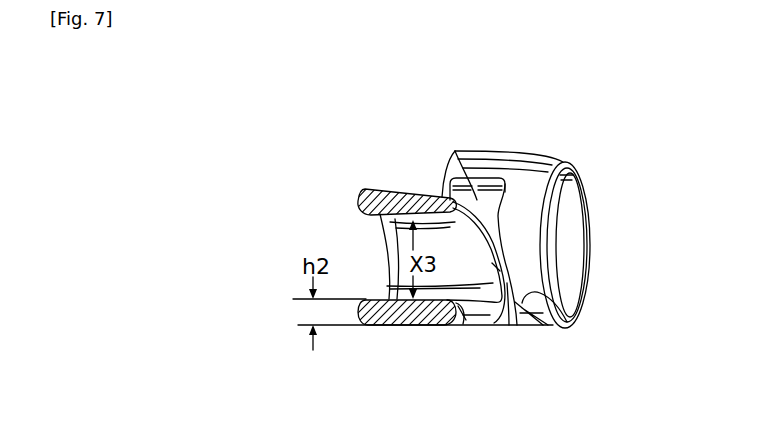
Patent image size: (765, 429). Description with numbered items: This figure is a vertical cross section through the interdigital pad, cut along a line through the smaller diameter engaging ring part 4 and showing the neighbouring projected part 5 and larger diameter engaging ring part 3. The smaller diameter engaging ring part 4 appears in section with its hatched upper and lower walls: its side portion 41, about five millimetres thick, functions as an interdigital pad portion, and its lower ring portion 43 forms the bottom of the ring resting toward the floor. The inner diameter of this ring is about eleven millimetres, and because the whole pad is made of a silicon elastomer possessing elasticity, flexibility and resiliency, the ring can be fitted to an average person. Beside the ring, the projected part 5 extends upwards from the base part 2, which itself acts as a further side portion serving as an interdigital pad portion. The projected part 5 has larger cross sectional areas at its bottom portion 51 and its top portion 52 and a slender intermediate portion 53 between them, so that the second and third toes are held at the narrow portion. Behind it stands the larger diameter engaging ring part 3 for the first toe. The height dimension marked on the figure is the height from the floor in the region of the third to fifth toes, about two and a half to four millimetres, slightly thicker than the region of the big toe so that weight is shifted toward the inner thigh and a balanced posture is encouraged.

The base part 2 is at (535, 327).
The larger diameter engaging ring part 3 is at (559, 145).
The smaller diameter engaging ring part 4 is at (376, 184).
The projected part 5 is at (480, 152).
The side portion 41 is at (493, 272).
The lower ring portion 43 is at (472, 327).
The bottom portion 51 is at (562, 324).
The top portion 52 is at (452, 152).
The intermediate portion 53 is at (503, 234).